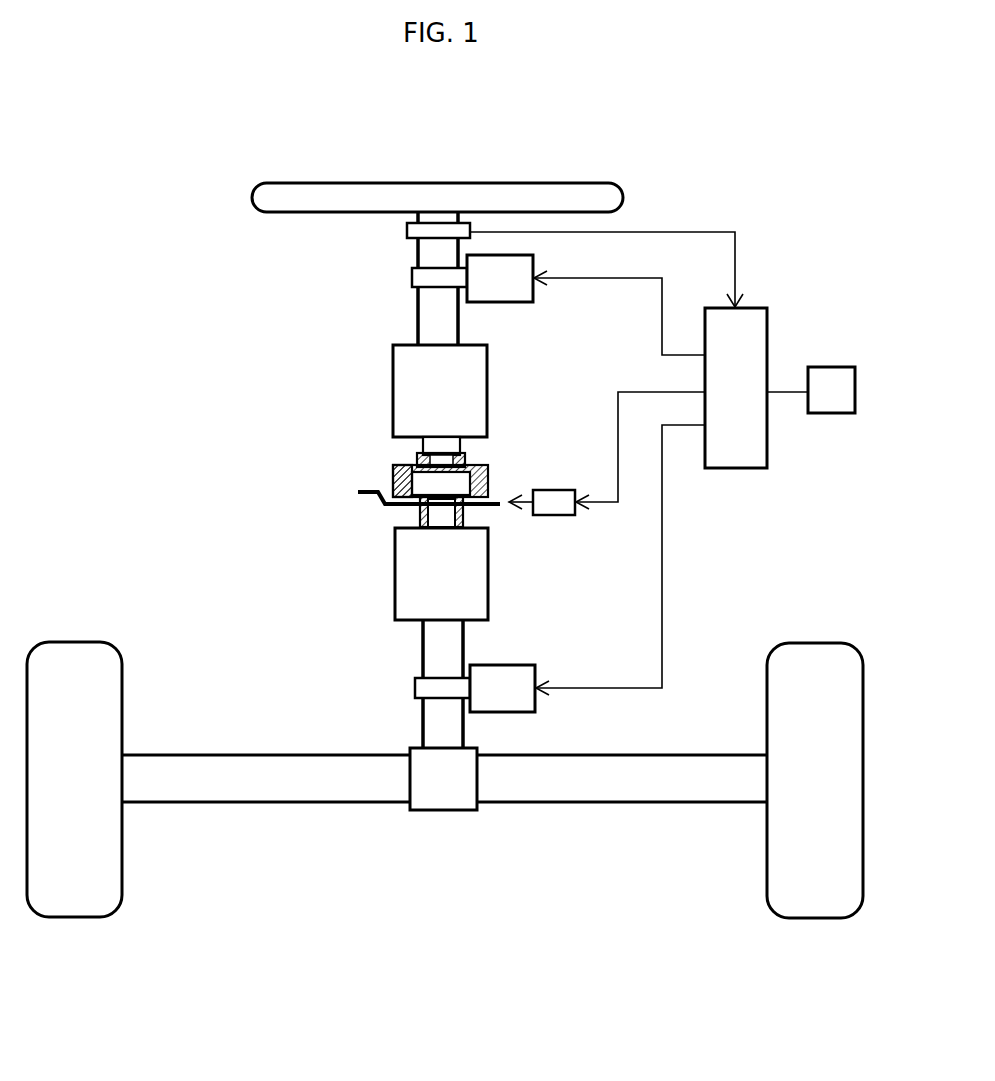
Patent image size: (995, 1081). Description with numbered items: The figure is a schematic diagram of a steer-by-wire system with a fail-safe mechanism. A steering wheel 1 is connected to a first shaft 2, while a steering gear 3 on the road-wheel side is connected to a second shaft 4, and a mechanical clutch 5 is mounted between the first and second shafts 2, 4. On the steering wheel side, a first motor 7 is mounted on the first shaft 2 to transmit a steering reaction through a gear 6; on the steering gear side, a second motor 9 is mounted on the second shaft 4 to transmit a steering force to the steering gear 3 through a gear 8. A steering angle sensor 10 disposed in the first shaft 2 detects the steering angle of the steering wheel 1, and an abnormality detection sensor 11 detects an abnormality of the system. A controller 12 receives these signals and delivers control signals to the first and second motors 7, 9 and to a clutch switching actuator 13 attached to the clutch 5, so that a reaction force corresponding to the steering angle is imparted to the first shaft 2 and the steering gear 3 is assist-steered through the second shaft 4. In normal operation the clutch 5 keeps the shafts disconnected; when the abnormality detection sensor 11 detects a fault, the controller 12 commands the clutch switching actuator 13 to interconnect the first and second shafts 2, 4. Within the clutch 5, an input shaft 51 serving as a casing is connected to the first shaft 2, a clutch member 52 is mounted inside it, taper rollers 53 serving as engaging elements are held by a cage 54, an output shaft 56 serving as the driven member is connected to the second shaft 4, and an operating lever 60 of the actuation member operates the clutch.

The steering wheel 1 is at (532, 183).
The first shaft 2 is at (418, 318).
The steering gear 3 is at (445, 812).
The second shaft 4 is at (432, 729).
The mechanical clutch 5 is at (337, 465).
The gear 6 is at (410, 279).
The first motor 7 is at (517, 302).
The gear 8 is at (413, 688).
The second motor 9 is at (520, 665).
The steering angle sensor 10 is at (405, 232).
The abnormality detection sensor 11 is at (830, 367).
The controller 12 is at (767, 457).
The clutch switching actuator 13 is at (557, 515).
The input shaft 51 is at (461, 449).
The clutch member 52 is at (488, 479).
The taper rollers 53 is at (488, 490).
The cage 54 is at (393, 471).
The output shaft 56 is at (430, 530).
The operating lever 60 is at (358, 493).